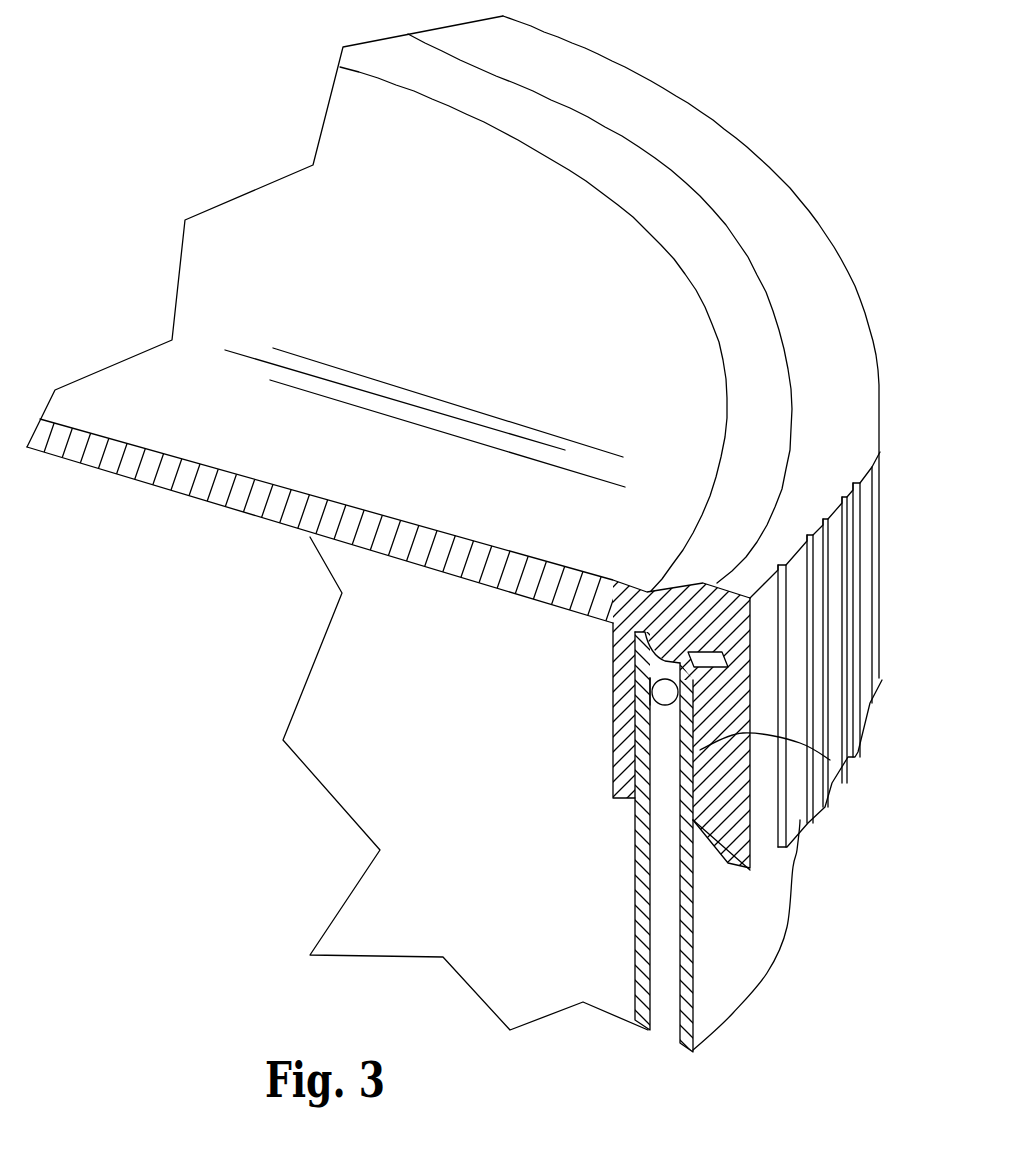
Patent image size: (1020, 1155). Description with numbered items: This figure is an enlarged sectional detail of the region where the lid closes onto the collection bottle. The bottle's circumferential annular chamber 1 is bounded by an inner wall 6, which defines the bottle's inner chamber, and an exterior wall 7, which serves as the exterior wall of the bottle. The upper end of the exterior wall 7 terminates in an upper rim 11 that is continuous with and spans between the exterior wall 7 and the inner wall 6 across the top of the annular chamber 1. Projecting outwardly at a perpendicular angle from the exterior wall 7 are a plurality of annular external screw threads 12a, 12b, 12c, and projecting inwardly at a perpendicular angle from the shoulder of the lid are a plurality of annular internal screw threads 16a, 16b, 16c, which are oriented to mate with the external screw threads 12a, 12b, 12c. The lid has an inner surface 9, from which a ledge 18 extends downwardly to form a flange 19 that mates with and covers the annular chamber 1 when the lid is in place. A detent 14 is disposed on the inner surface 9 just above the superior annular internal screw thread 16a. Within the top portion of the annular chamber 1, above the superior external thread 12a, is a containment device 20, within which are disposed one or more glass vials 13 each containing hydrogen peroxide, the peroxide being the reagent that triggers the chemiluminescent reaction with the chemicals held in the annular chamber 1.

The annular chamber 1 is at (678, 1008).
The inner wall 6 is at (642, 963).
The exterior wall 7 is at (693, 1007).
The inner surface 9 is at (195, 498).
The upper rim 11 is at (643, 647).
The annular external screw thread 12a is at (705, 705).
The annular external screw thread 12b is at (700, 747).
The annular external screw thread 12c is at (703, 800).
The glass vial 13 is at (655, 690).
The detent 14 is at (657, 630).
The annular internal screw thread 16a is at (705, 690).
The annular internal screw thread 16b is at (705, 733).
The annular internal screw thread 16c is at (703, 820).
The ledge 18 is at (640, 693).
The flange 19 is at (633, 793).
The containment device 20 is at (690, 700).